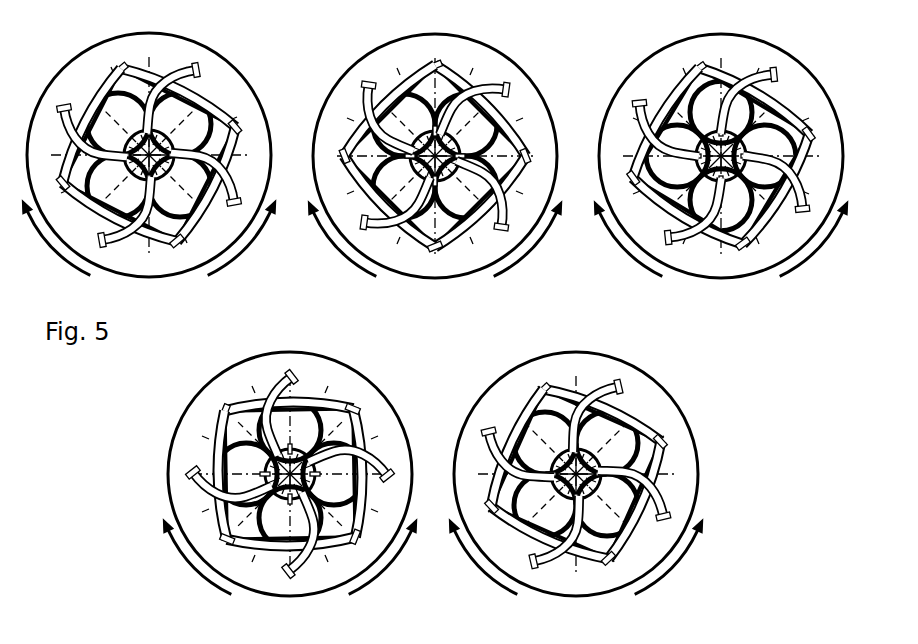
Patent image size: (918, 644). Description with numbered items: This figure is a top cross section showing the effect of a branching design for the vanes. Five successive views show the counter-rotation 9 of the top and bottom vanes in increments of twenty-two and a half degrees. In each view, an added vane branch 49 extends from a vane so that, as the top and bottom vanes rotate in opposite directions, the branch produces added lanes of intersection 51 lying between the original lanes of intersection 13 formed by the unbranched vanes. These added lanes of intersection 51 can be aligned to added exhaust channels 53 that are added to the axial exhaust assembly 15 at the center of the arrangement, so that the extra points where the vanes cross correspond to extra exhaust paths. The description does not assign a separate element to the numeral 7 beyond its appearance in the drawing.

The drive hub 7 is at (149, 116).
The counter-rotation 9 is at (53, 238).
The original lanes of intersection 13 is at (151, 139).
The axial exhaust assembly 15 is at (120, 158).
The added vane branch 49 is at (155, 155).
The added lanes of intersection 51 is at (178, 151).
The added exhaust channels 53 is at (721, 137).